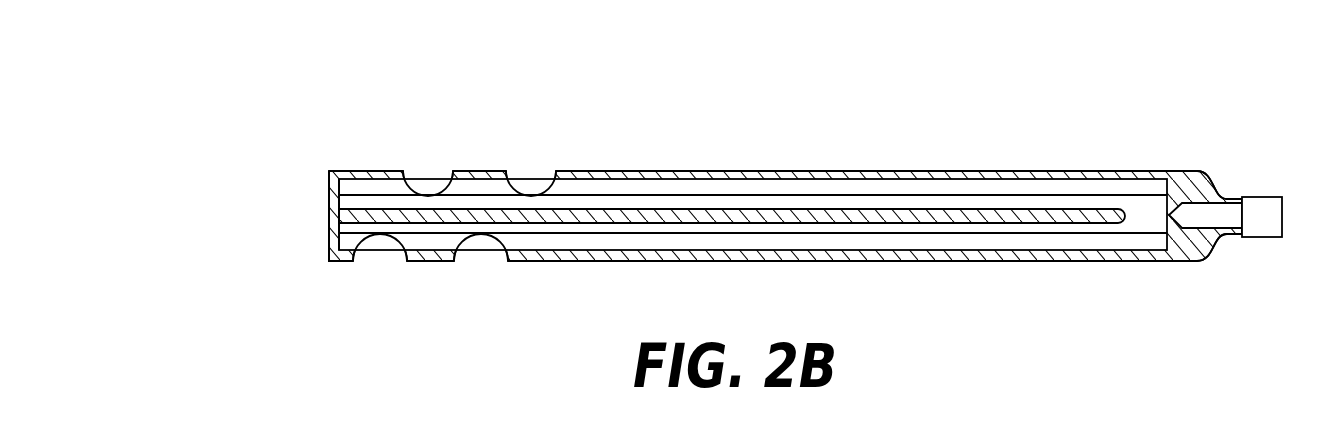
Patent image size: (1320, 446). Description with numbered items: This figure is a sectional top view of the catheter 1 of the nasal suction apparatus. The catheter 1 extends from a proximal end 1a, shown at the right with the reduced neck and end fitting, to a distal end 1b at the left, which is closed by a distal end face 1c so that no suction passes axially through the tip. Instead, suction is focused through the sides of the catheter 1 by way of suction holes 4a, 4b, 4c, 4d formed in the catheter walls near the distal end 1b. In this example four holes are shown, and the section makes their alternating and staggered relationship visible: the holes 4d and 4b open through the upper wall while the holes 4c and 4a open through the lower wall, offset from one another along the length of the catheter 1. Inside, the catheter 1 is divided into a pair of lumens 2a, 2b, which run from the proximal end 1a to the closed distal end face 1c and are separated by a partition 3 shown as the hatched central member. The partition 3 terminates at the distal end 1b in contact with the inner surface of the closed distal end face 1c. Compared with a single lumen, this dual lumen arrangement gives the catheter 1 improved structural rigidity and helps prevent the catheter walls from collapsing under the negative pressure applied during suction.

The catheter 1 is at (697, 146).
The proximal end 1a is at (1177, 283).
The distal end 1b is at (310, 268).
The distal end face 1c is at (330, 200).
The lumen 2a is at (897, 197).
The lumen 2b is at (952, 235).
The partition 3 is at (712, 215).
The suction hole 4a is at (482, 250).
The suction hole 4b is at (533, 185).
The suction hole 4c is at (378, 250).
The suction hole 4d is at (427, 185).